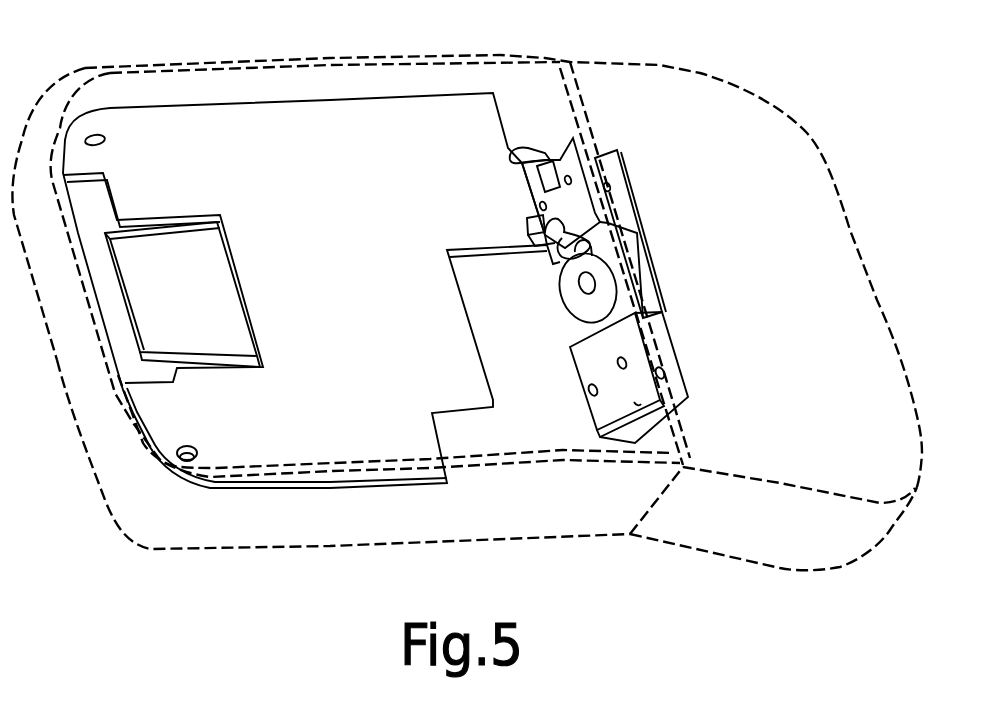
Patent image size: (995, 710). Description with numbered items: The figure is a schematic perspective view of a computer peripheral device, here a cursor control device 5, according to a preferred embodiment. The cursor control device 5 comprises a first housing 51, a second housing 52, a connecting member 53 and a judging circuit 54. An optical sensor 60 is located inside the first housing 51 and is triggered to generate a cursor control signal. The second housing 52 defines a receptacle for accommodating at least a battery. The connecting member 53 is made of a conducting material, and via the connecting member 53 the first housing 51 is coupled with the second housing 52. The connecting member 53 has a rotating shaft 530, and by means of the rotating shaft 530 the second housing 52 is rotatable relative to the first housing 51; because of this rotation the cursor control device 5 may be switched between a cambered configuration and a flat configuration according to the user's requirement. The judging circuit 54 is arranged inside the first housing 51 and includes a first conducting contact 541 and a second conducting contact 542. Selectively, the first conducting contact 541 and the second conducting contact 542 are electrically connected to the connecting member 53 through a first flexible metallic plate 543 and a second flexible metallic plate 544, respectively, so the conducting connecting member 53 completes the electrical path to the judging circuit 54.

The cursor control device 5 is at (643, 187).
The first housing 51 is at (242, 530).
The second housing 52 is at (778, 178).
The connecting member 53 is at (660, 347).
The judging circuit 54 is at (223, 140).
The optical sensor 60 is at (148, 288).
The rotating shaft 530 is at (605, 260).
The first conducting contact 541 is at (512, 158).
The second conducting contact 542 is at (528, 220).
The first flexible metallic plate 543 is at (552, 155).
The second flexible metallic plate 544 is at (560, 235).